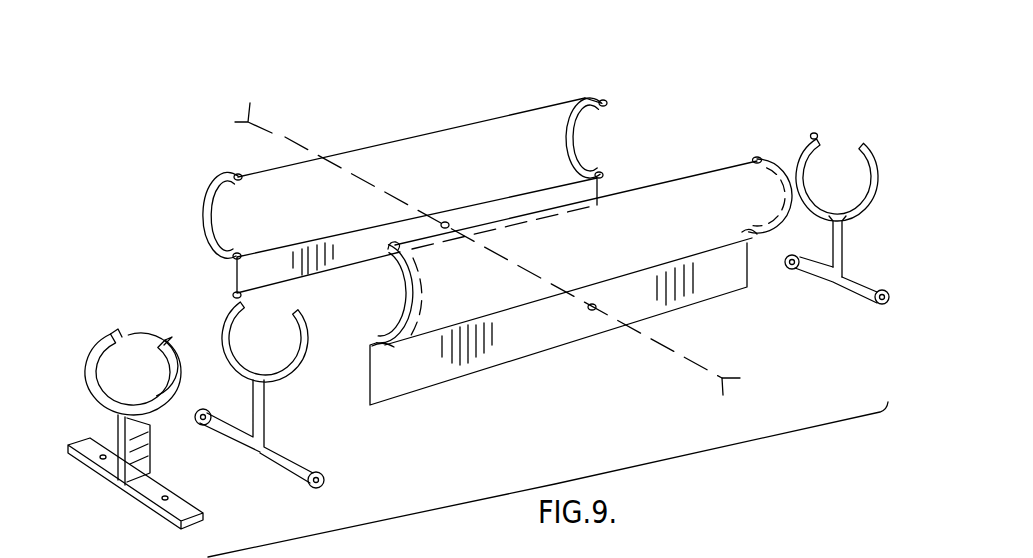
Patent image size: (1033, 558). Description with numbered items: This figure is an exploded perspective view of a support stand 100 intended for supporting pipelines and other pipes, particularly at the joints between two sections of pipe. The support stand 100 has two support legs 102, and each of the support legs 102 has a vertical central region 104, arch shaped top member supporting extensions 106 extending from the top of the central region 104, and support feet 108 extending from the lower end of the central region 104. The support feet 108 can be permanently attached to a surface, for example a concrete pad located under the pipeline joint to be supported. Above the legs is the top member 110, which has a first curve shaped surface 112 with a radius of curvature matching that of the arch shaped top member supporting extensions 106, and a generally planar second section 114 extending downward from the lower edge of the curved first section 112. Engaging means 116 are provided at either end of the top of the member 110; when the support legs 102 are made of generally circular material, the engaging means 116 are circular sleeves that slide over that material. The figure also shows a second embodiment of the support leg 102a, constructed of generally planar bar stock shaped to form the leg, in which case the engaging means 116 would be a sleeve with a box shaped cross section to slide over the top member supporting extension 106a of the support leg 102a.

The support stand 100 is at (384, 126).
The top member 110 is at (529, 100).
The first curve shaped surface 112 is at (670, 203).
The generally planar second section 114 is at (530, 327).
The engaging means 116 is at (763, 152).
The support leg 102 is at (843, 214).
The vertical central region 104 is at (842, 253).
The arch shaped top member supporting extensions 106 is at (817, 131).
The support feet 108 is at (850, 298).
The support leg 102a is at (135, 392).
The top member supporting extension 106a is at (102, 357).